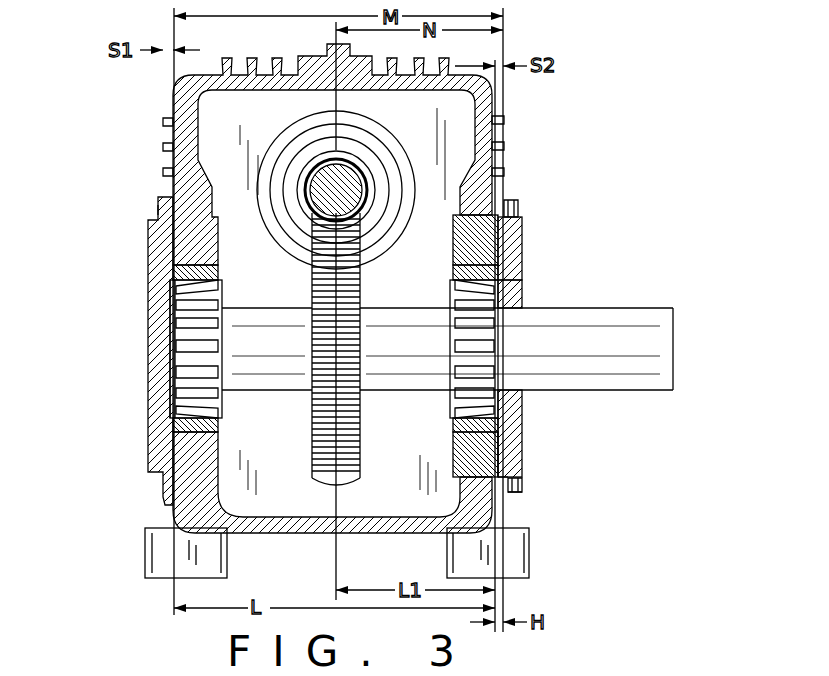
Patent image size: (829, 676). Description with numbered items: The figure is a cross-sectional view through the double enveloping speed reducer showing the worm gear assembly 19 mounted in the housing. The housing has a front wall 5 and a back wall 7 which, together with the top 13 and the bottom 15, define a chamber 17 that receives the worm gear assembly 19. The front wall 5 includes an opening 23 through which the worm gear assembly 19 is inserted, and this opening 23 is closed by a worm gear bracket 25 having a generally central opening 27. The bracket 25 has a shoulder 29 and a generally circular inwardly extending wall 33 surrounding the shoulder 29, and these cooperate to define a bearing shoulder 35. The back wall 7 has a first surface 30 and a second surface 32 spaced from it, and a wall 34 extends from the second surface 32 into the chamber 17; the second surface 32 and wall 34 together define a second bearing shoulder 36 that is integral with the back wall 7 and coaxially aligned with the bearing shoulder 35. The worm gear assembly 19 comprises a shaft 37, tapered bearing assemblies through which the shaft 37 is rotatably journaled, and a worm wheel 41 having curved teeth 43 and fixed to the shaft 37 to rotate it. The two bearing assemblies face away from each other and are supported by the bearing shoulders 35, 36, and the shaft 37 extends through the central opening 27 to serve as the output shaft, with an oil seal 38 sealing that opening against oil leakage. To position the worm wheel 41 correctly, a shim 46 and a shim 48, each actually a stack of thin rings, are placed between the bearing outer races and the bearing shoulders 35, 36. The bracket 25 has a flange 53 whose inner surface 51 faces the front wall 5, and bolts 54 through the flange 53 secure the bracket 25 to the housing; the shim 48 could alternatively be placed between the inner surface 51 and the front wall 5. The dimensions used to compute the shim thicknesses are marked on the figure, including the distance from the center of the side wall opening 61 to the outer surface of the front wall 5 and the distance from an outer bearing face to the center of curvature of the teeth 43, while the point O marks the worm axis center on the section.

The front wall 5 is at (510, 200).
The back wall 7 is at (173, 118).
The top 13 is at (452, 62).
The bottom 15 is at (270, 534).
The chamber 17 is at (445, 134).
The worm gear assembly 19 is at (272, 461).
The opening 23 is at (520, 205).
The worm gear bracket 25 is at (523, 443).
The central opening 27 is at (522, 297).
The shoulder 29 is at (523, 418).
The first surface 30 is at (148, 419).
The second surface 32 is at (148, 432).
The inwardly extending wall 33 is at (500, 457).
The wall 34 is at (163, 476).
The bearing shoulder 35 is at (522, 277).
The second bearing shoulder 36 is at (173, 281).
The shaft 37 is at (673, 352).
The oil seal 38 is at (523, 400).
The worm wheel 41 is at (312, 446).
The teeth 43 is at (339, 482).
The shim 46 is at (176, 264).
The shim 48 is at (522, 253).
The inner surface 51 is at (507, 495).
The flange 53 is at (513, 483).
The bolts 54 is at (515, 488).
The opening 61 is at (283, 138).
The worm axis center O is at (338, 187).